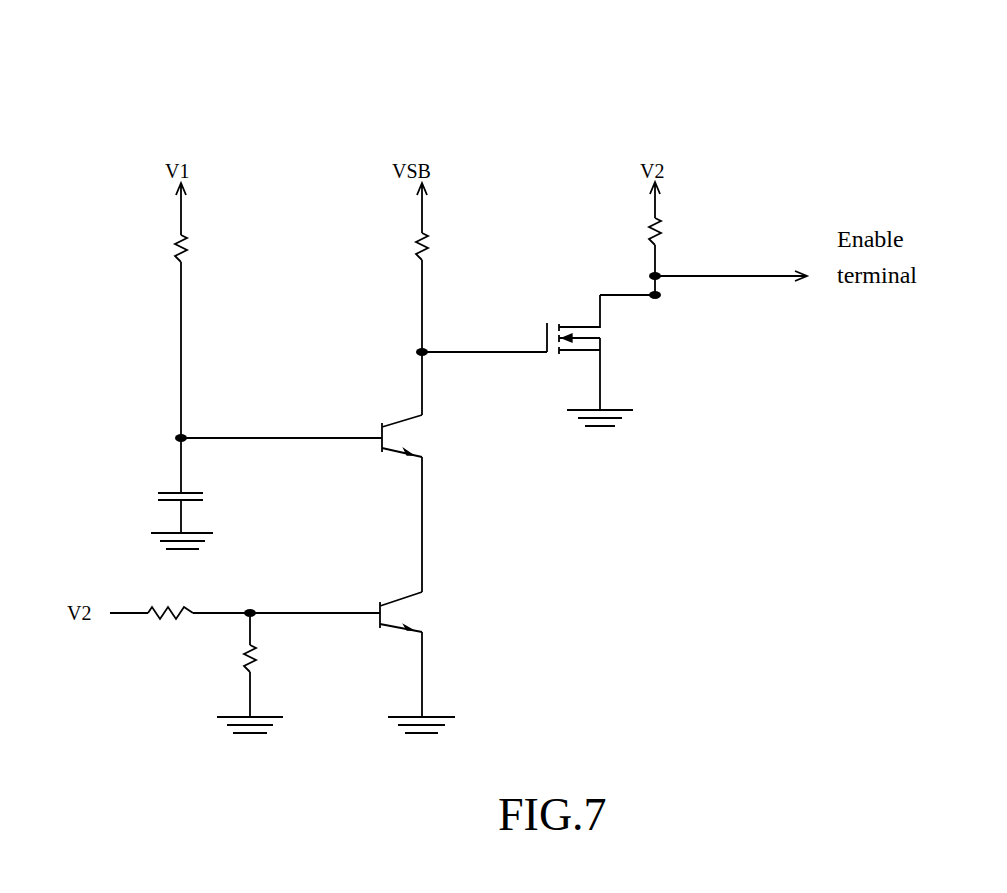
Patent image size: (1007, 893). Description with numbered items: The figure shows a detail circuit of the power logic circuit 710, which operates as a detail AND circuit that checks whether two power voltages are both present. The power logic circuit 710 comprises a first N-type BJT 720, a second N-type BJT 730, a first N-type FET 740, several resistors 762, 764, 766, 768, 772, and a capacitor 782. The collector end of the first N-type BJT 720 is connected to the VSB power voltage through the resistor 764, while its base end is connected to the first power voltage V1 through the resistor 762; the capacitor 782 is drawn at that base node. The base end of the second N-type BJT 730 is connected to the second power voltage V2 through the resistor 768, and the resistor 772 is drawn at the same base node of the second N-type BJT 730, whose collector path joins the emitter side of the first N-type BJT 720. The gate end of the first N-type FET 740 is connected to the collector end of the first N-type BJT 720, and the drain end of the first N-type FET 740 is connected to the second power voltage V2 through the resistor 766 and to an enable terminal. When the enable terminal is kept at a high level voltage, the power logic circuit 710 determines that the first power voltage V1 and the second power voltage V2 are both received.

The power logic circuit 710 is at (843, 112).
The first N-type BJT 720 is at (403, 432).
The second N-type BJT 730 is at (403, 608).
The first N-type FET 740 is at (578, 325).
The resistor 762 is at (190, 254).
The resistor 764 is at (432, 252).
The resistor 766 is at (667, 240).
The resistor 768 is at (190, 611).
The resistor 772 is at (258, 663).
The capacitor 782 is at (205, 497).